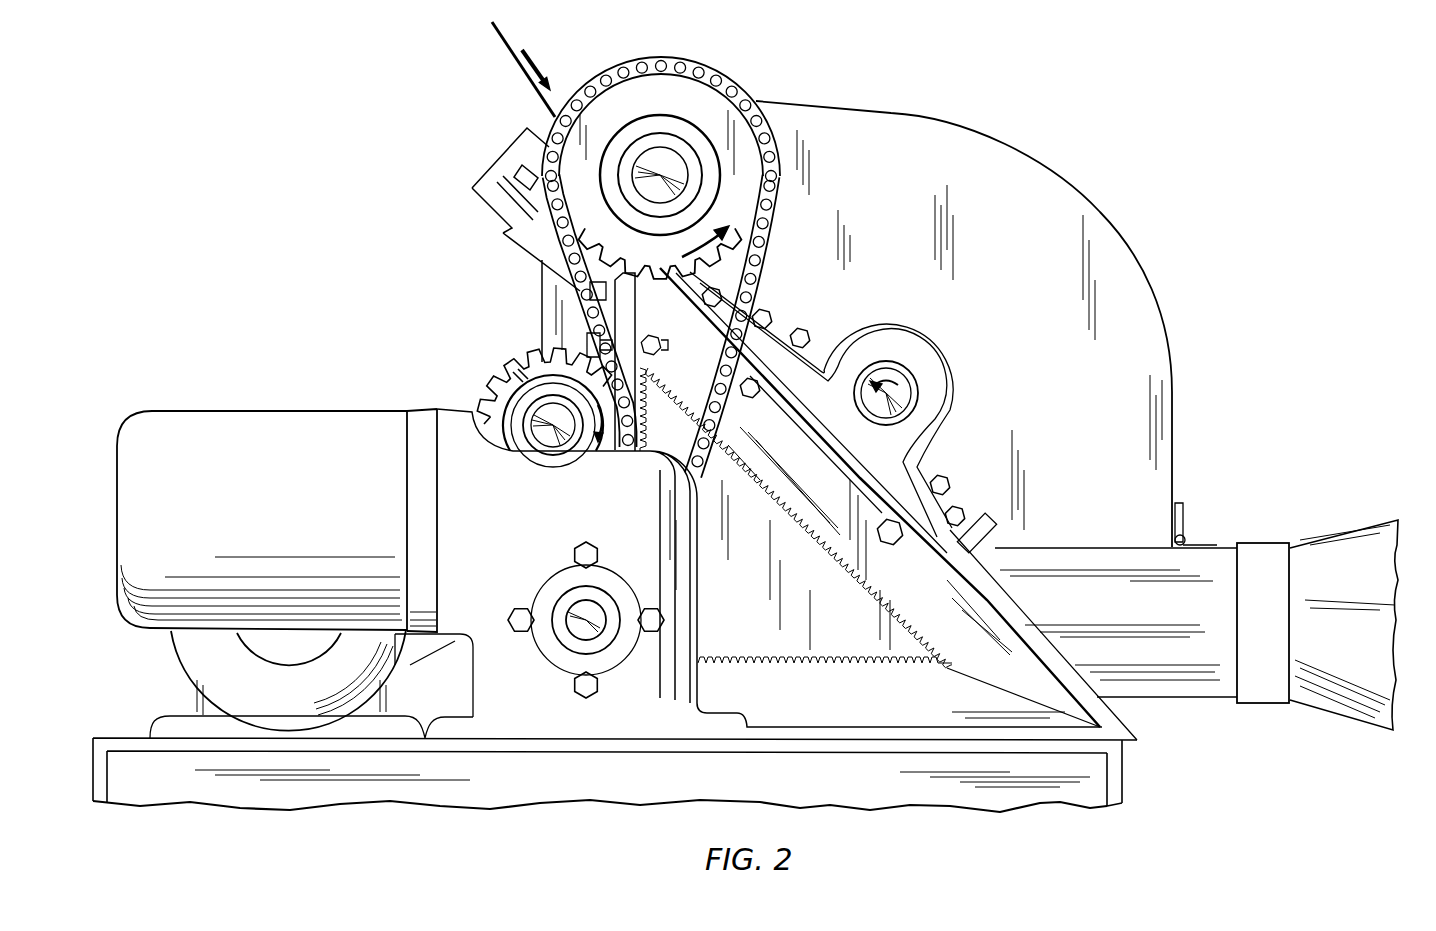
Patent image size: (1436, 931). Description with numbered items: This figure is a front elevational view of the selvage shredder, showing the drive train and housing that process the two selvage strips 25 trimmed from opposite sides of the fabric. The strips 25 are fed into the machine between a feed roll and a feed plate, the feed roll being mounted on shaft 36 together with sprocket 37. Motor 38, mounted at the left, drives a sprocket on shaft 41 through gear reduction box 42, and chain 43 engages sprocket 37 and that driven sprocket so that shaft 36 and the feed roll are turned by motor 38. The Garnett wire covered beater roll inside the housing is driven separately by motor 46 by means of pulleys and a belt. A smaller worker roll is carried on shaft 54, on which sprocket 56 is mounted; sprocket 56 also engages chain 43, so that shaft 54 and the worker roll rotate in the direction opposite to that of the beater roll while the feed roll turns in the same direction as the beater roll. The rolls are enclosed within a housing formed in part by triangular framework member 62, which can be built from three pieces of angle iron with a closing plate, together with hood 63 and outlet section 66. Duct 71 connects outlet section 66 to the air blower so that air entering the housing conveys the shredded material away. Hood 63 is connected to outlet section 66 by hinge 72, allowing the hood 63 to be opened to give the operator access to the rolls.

The selvage strips 25 is at (523, 78).
The shaft 36 is at (690, 184).
The sprocket 37 is at (672, 294).
The motor 38 is at (258, 411).
The shaft 41 is at (576, 630).
The gear reduction box 42 is at (692, 606).
The chain 43 is at (757, 268).
The motor 46 is at (172, 648).
The shaft 54 is at (538, 450).
The sprocket 56 is at (522, 357).
The triangular framework member 62 is at (990, 592).
The hood 63 is at (1162, 315).
The outlet section 66 is at (1226, 545).
The duct 71 is at (1362, 527).
The hinge 72 is at (1188, 535).